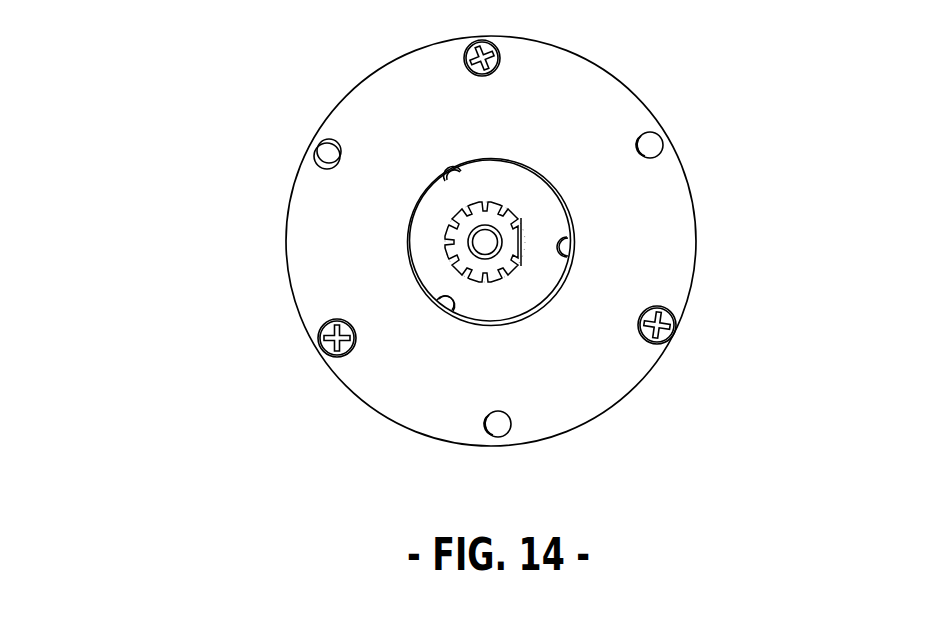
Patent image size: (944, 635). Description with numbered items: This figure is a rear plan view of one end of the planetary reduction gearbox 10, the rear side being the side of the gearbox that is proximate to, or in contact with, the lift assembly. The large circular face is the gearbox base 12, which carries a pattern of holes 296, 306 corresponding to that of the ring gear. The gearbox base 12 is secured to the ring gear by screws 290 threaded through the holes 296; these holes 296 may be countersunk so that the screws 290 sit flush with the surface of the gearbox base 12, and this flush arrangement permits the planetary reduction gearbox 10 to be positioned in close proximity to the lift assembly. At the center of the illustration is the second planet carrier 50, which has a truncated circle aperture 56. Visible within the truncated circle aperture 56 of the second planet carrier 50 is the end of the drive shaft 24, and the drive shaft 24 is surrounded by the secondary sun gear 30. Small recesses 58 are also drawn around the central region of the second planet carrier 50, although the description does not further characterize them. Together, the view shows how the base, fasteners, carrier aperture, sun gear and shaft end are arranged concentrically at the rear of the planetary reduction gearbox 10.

The planetary reduction gearbox 10 is at (120, 103).
The gearbox base 12 is at (657, 245).
The drive shaft 24 is at (485, 243).
The secondary sun gear 30 is at (465, 225).
The second planet carrier 50 is at (512, 296).
The truncated circle aperture 56 is at (519, 252).
The recesses 58 is at (442, 307).
The screws 290 is at (325, 333).
The holes 296 is at (313, 348).
The holes 306 is at (651, 145).